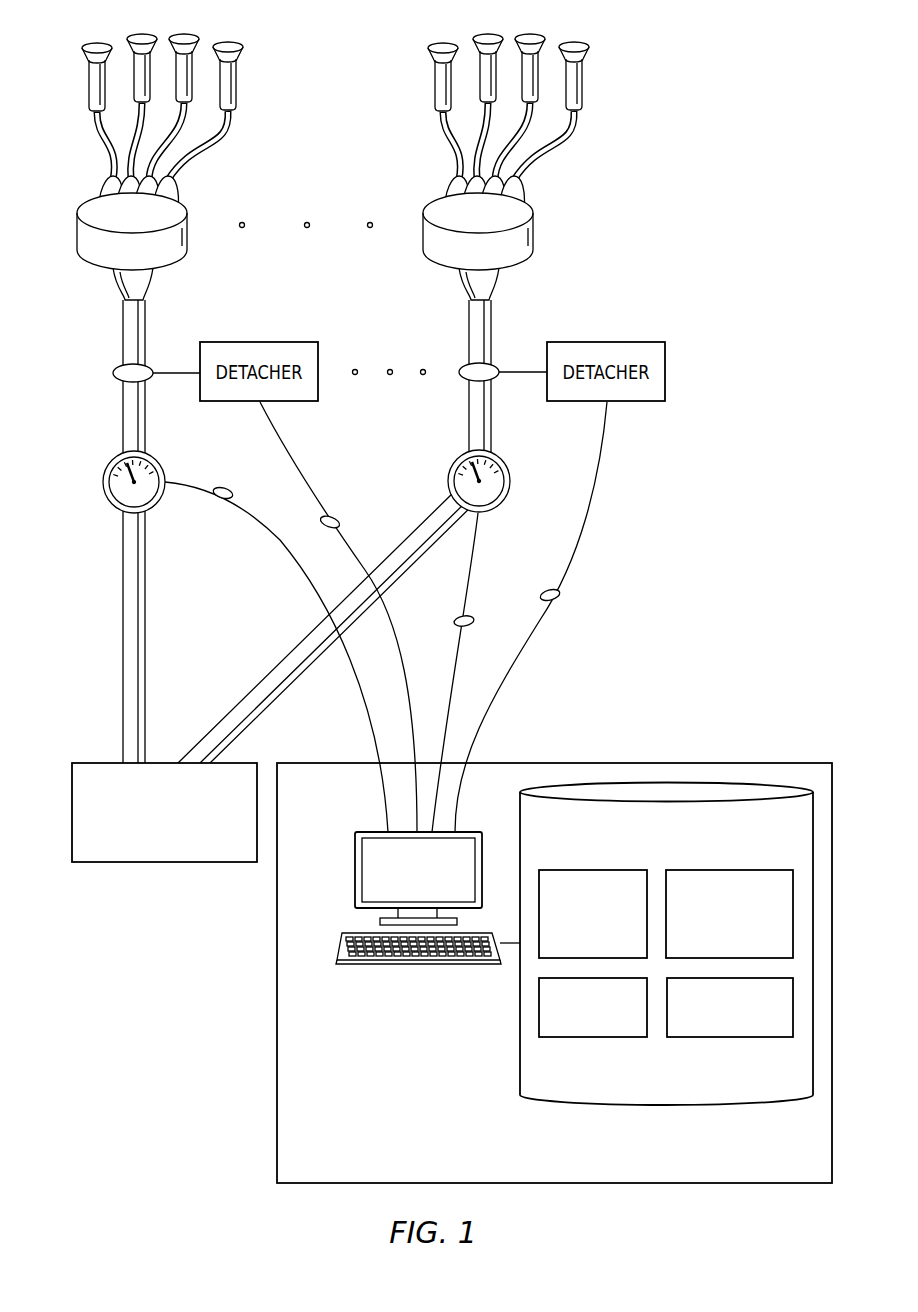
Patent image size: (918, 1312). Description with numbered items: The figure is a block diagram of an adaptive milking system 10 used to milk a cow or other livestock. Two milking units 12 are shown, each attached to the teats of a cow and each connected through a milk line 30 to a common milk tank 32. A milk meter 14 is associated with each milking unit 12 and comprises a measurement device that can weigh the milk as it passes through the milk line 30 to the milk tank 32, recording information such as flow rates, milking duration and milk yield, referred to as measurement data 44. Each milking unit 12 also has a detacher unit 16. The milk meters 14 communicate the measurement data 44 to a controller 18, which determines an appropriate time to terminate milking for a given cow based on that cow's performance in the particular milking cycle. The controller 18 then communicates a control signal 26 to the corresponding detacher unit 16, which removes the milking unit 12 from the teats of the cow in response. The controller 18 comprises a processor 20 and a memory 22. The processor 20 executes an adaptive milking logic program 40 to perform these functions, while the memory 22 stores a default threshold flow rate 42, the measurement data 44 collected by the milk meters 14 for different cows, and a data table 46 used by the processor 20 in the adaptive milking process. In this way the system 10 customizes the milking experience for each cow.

The adaptive milking system 10 is at (737, 257).
The milking unit 12 is at (87, 263).
The milk meter 14 is at (103, 480).
The detacher unit 16 is at (260, 342).
The controller 18 is at (272, 1040).
The processor 20 is at (355, 870).
The memory 22 is at (666, 972).
The control signal 26 is at (339, 521).
The milk line 30 is at (123, 637).
The milk tank 32 is at (163, 862).
The adaptive milking logic program 40 is at (588, 870).
The default threshold flow rate 42 is at (730, 870).
The measurement data 44 is at (232, 491).
The data table 46 is at (732, 1037).